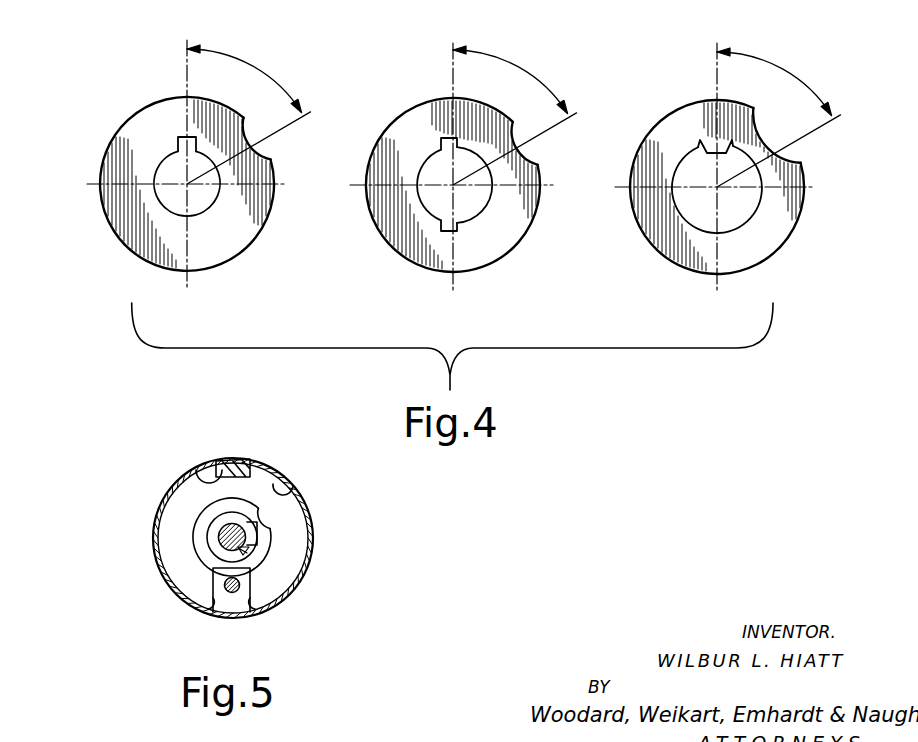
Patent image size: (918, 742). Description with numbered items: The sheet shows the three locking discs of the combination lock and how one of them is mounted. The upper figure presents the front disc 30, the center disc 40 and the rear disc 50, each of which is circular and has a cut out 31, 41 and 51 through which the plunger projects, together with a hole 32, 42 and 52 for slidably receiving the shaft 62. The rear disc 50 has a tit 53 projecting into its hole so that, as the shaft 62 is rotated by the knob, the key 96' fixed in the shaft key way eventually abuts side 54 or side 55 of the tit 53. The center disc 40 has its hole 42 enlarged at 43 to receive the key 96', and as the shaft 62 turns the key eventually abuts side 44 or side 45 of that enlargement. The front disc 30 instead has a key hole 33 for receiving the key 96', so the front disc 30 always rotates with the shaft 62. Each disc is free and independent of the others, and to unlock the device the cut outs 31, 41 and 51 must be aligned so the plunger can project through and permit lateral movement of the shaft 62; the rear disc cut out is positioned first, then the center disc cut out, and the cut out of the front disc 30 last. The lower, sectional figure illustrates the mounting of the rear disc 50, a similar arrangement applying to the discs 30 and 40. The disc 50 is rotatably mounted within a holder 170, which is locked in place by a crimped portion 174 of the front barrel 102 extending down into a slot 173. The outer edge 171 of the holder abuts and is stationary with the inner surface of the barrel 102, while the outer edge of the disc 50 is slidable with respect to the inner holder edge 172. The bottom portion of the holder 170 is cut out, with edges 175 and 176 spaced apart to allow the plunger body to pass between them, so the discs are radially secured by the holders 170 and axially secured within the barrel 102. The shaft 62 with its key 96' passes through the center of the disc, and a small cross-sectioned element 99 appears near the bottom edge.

In FIG. 4, the front disc 30 is at (120, 110).
In FIG. 4, the cut out 31 is at (255, 152).
In FIG. 4, the hole 32 is at (172, 195).
In FIG. 4, the key hole 33 is at (185, 137).
In FIG. 4, the center disc 40 is at (410, 102).
In FIG. 4, the cut out 41 is at (530, 150).
In FIG. 4, the hole 42 is at (438, 195).
In FIG. 4, the enlarged portion of hole 43 is at (482, 207).
In FIG. 4, the side 44 is at (457, 142).
In FIG. 4, the side 45 is at (460, 232).
In FIG. 4, the rear disc 50 is at (680, 102).
In FIG. 5, the rear disc 50 is at (264, 553).
In FIG. 4, the cut out 51 is at (786, 153).
In FIG. 4, the hole 52 is at (698, 207).
In FIG. 4, the tit 53 is at (732, 152).
In FIG. 5, the tit 53 is at (262, 546).
In FIG. 4, the side 54 is at (753, 118).
In FIG. 4, the side 55 is at (686, 142).
In FIG. 5, the shaft 62 is at (258, 533).
In FIG. 5, the key 96' is at (182, 600).
In FIG. 5, the corner recess 99 is at (248, 585).
In FIG. 5, the front barrel 102 is at (312, 520).
In FIG. 5, the holder 170 is at (303, 503).
In FIG. 5, the outer edge 171 is at (288, 517).
In FIG. 5, the inner holder edge 172 is at (253, 502).
In FIG. 5, the slot 173 is at (197, 473).
In FIG. 5, the crimped portion 174 is at (232, 458).
In FIG. 5, the edge 175 is at (226, 612).
In FIG. 5, the edge 176 is at (241, 594).